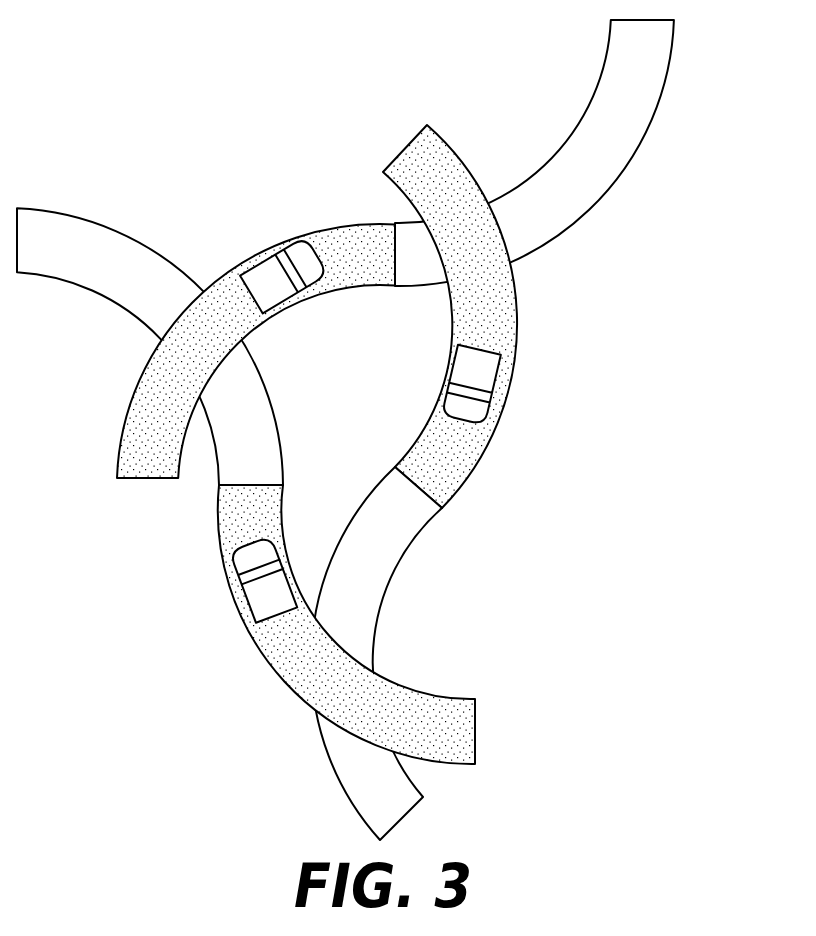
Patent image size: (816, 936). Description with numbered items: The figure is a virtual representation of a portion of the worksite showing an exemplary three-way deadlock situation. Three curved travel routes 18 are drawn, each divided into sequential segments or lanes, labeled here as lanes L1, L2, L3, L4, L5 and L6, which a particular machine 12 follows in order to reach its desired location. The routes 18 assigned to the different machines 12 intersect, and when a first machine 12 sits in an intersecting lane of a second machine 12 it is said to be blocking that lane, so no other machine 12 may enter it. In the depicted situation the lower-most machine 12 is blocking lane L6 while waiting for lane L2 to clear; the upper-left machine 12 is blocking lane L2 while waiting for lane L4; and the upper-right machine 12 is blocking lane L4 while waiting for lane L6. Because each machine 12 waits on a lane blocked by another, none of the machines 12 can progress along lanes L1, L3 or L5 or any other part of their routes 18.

The machine 12 is at (364, 430).
The travel route 18 is at (383, 430).
The lane L1 is at (346, 624).
The lane L2 is at (150, 346).
The lane L3 is at (256, 351).
The lane L4 is at (534, 153).
The lane L5 is at (450, 316).
The lane L6 is at (376, 653).